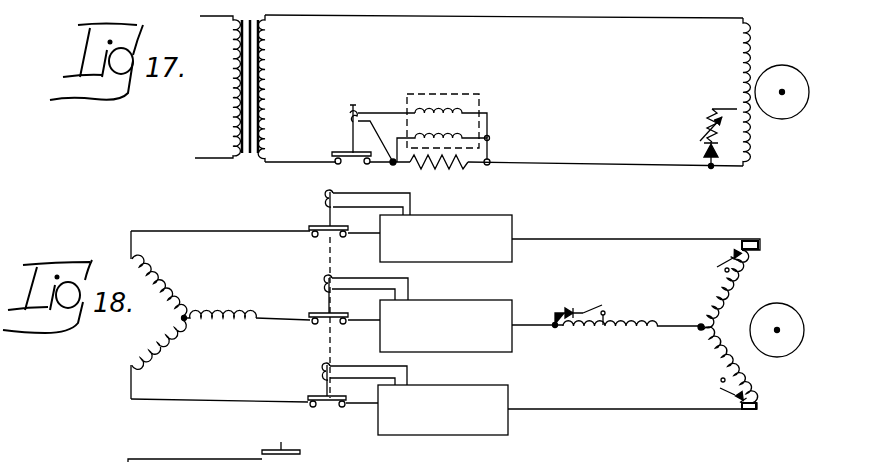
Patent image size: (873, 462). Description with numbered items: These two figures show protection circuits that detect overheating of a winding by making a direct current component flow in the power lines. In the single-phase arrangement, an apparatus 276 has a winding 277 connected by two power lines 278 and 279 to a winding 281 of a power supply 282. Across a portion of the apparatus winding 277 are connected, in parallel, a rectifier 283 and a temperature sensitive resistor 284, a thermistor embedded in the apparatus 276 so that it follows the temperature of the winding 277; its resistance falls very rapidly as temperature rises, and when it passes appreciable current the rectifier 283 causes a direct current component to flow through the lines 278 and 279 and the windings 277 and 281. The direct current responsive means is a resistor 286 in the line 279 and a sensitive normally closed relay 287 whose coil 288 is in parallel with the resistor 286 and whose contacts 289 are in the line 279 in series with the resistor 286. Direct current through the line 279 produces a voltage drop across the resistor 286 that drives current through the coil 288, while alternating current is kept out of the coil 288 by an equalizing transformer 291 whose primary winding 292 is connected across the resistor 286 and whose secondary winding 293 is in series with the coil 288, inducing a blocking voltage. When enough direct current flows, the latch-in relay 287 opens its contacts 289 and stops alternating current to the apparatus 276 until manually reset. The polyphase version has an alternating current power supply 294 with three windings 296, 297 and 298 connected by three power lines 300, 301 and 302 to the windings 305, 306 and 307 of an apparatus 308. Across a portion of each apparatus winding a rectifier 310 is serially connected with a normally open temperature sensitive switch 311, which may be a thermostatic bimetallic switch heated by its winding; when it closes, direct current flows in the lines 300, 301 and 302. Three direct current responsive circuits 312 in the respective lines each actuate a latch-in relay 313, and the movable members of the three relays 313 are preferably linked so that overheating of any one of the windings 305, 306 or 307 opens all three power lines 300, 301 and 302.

In FIG. 17, the apparatus 276 is at (763, 61).
In FIG. 17, the winding 277 is at (732, 49).
In FIG. 17, the power line 278 is at (517, 18).
In FIG. 17, the power line 279 is at (574, 157).
In FIG. 17, the winding 281 is at (280, 80).
In FIG. 17, the power supply 282 is at (249, 160).
In FIG. 17, the rectifier 283 is at (702, 146).
In FIG. 17, the temperature sensitive resistor 284 is at (700, 120).
In FIG. 17, the resistor 286 is at (460, 168).
In FIG. 17, the relay 287 is at (365, 102).
In FIG. 17, the coil 288 is at (348, 122).
In FIG. 17, the contacts 289 is at (335, 162).
In FIG. 17, the equalizing transformer 291 is at (460, 92).
In FIG. 17, the primary winding 292 is at (462, 137).
In FIG. 17, the secondary winding 293 is at (462, 112).
In FIG. 18, the alternating current power supply 294 is at (114, 352).
In FIG. 18, the winding 296 is at (165, 294).
In FIG. 18, the winding 297 is at (221, 312).
In FIG. 18, the winding 298 is at (160, 346).
In FIG. 18, the power line 300 is at (238, 234).
In FIG. 18, the power line 301 is at (285, 323).
In FIG. 18, the power line 302 is at (250, 391).
In FIG. 18, the winding 305 is at (733, 296).
In FIG. 18, the winding 306 is at (630, 332).
In FIG. 18, the winding 307 is at (712, 355).
In FIG. 18, the apparatus 308 is at (752, 362).
In FIG. 18, the rectifier 310 is at (567, 305).
In FIG. 18, the temperature sensitive switch 311 is at (598, 303).
In FIG. 18, the direct current responsive circuit 312 is at (508, 225).
In FIG. 18, the latch-in relay 313 is at (318, 222).